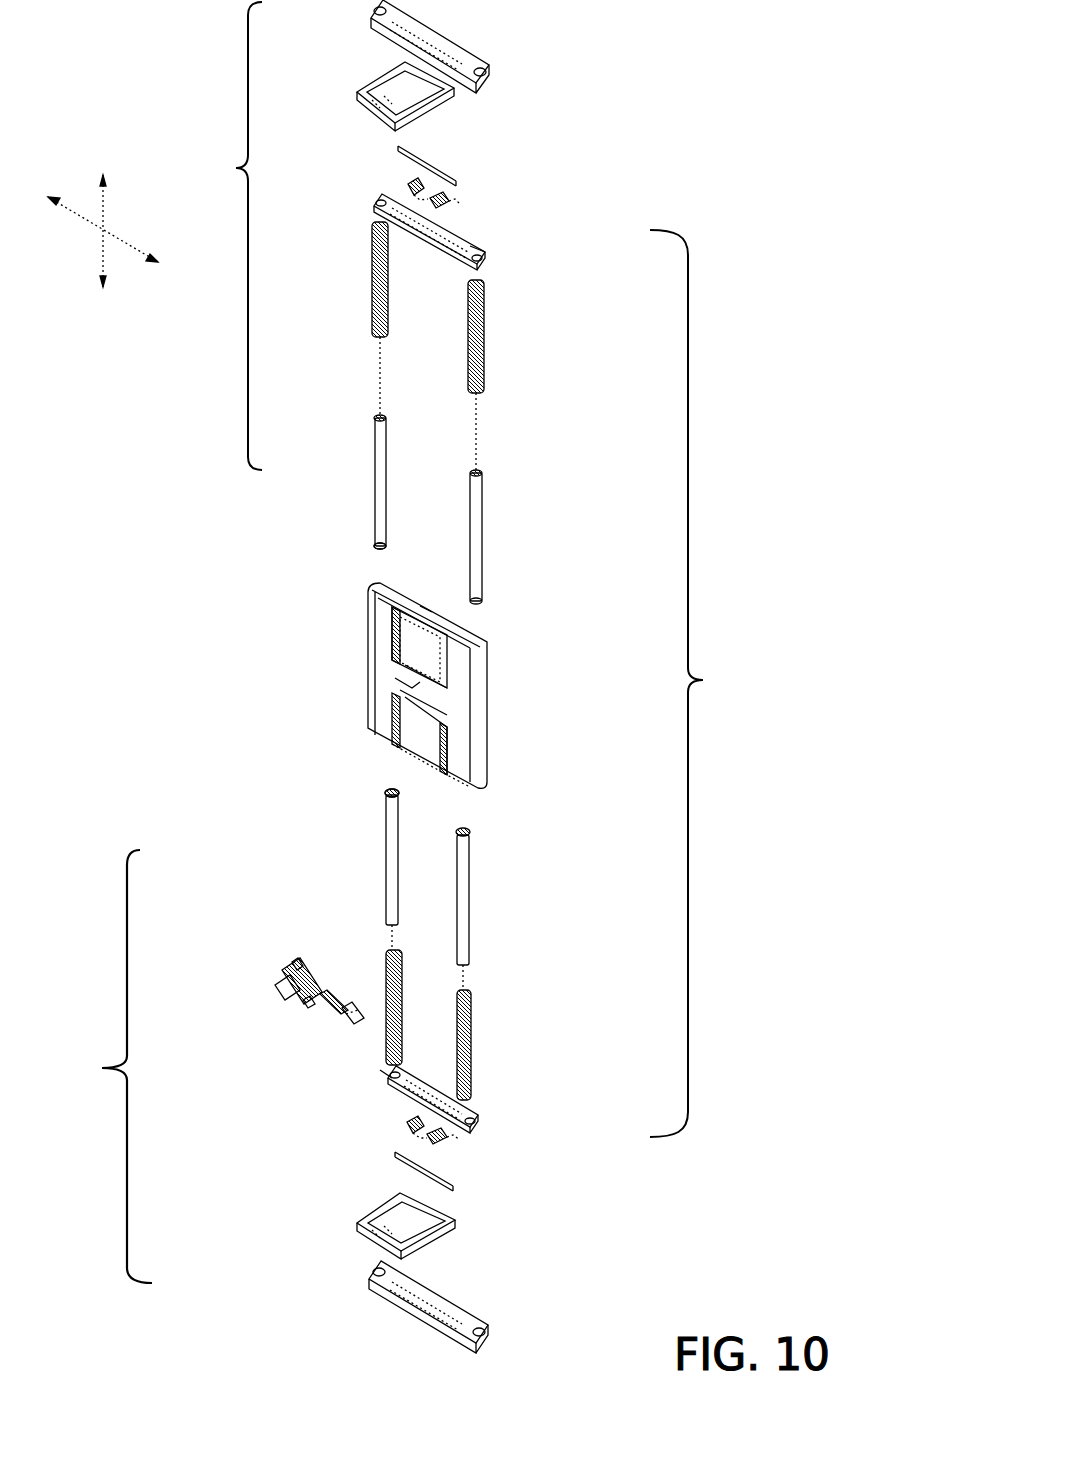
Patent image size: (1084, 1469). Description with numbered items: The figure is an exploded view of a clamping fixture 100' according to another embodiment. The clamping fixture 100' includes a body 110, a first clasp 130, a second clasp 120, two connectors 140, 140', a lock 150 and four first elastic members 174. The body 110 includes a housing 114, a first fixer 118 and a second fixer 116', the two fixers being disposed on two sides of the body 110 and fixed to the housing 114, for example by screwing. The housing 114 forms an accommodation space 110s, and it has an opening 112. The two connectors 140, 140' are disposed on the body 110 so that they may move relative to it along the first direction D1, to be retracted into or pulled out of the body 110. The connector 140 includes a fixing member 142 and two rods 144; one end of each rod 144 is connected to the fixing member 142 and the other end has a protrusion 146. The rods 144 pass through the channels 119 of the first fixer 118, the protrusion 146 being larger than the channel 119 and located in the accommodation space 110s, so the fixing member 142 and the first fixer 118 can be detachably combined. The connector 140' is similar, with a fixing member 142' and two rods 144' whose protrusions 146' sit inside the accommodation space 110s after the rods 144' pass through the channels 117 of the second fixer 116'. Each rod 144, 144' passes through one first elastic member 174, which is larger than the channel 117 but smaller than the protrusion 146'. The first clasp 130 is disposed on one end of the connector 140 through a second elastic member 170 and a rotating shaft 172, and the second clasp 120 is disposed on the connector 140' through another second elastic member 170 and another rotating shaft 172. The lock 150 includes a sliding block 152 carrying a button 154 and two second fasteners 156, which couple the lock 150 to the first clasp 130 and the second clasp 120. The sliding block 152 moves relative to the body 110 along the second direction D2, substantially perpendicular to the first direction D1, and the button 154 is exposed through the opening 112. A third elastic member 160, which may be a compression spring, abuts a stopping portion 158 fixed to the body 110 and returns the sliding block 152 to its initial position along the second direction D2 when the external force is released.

The clamping fixture 100' is at (122, 47).
The body 110 is at (703, 680).
The accommodation space 110s is at (427, 600).
The opening 112 is at (404, 686).
The housing 114 is at (482, 718).
The second fixer 116' is at (518, 234).
The channel 117 is at (488, 246).
The first fixer 118 is at (468, 1129).
The channel 119 is at (372, 1072).
The second clasp 120 is at (372, 85).
The first clasp 130 is at (438, 1236).
The connector 140 is at (104, 1066).
The connector 140' is at (217, 236).
The fixing member 142 is at (316, 1303).
The fixing member 142' is at (372, 46).
The rod 144 is at (360, 889).
The rod 144' is at (422, 470).
The protrusion 146 is at (347, 784).
The protrusion 146' is at (343, 556).
The lock 150 is at (258, 963).
The sliding block 152 is at (300, 1002).
The button 154 is at (284, 992).
The second fastener 156 is at (297, 966).
The stopping portion 158 is at (345, 996).
The third elastic member 160 is at (342, 1012).
The second elastic member 170 is at (460, 204).
The rotating shaft 172 is at (432, 170).
The first elastic member 174 is at (371, 254).
The first direction D1 is at (100, 214).
The second direction D2 is at (119, 238).